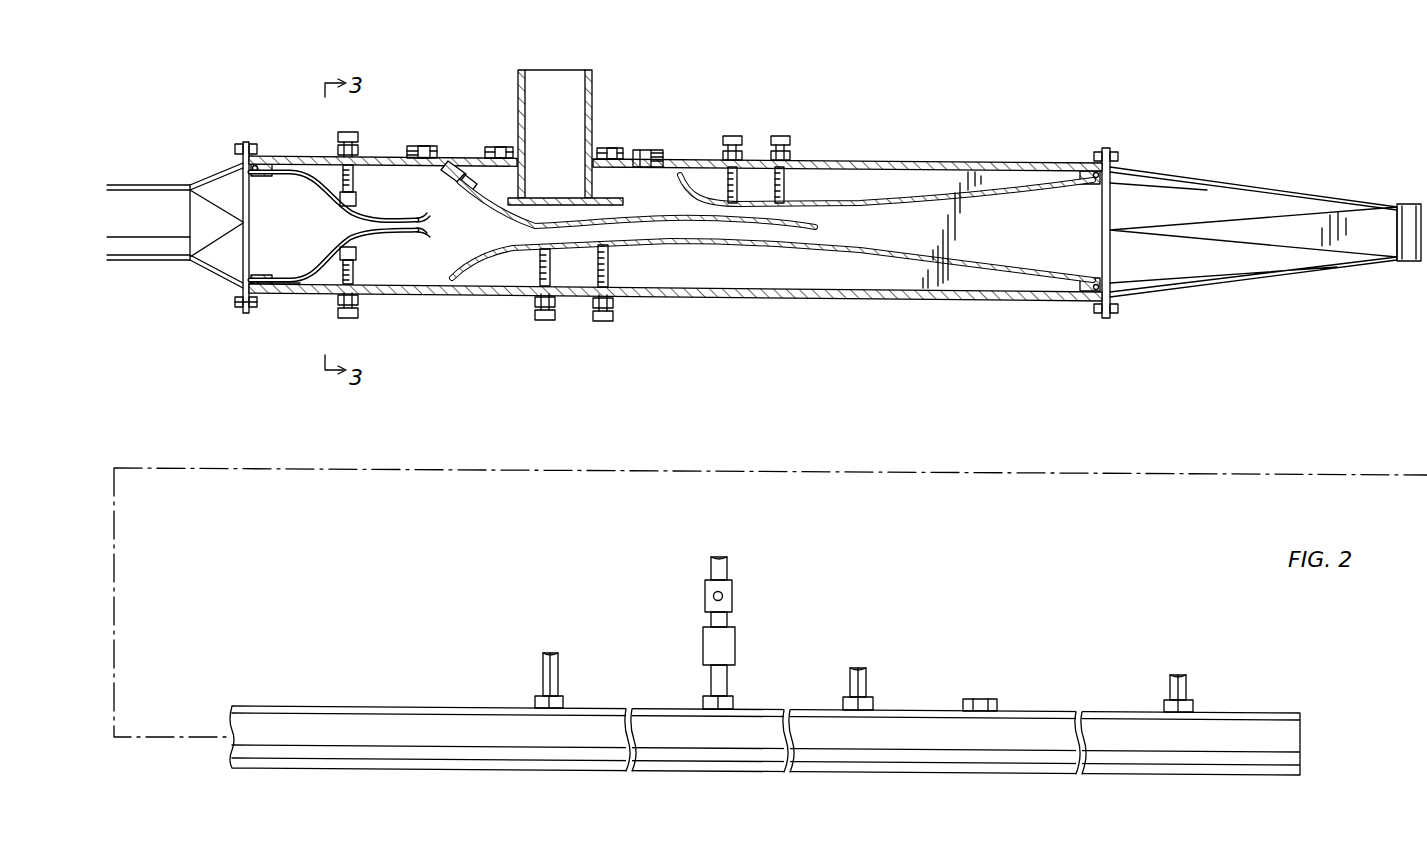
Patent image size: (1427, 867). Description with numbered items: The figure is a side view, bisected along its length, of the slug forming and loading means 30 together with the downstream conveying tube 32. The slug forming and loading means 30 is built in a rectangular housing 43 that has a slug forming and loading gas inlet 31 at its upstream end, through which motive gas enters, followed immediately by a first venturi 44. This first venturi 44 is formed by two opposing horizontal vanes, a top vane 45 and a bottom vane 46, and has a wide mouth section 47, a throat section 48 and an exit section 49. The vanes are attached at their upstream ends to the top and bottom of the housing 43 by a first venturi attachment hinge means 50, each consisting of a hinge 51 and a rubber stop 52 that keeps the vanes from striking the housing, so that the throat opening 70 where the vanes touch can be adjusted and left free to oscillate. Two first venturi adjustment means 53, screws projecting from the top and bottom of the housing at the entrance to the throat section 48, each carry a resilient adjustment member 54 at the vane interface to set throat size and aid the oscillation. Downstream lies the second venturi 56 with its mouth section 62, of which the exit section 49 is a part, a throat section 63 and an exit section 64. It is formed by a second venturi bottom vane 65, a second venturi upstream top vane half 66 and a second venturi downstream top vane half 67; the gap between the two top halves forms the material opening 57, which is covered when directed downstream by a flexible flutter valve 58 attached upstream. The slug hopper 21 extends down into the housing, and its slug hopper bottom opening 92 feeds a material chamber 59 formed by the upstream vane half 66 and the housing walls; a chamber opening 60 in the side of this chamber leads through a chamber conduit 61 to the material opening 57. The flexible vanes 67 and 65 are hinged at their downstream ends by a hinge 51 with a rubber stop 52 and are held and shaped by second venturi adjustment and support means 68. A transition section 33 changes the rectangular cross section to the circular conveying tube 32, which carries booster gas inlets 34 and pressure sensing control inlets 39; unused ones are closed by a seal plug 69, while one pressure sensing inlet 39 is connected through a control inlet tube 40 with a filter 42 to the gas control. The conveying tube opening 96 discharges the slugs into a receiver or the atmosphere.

The slug hopper 21 is at (585, 165).
The slug forming and loading means 30 is at (852, 163).
The slug forming and loading gas inlet 31 is at (205, 190).
The conveying tube 32 is at (1405, 205).
The transition section 33 is at (1236, 183).
The booster gas inlets 34 is at (535, 699).
The pressure sensing control inlet 39 is at (437, 149).
The control inlet tube 40 is at (733, 594).
The filter 42 is at (735, 644).
The housing 43 is at (833, 300).
The first venturi 44 is at (348, 226).
The top vane 45 is at (299, 170).
The bottom vane 46 is at (292, 287).
The wide mouth section 47 is at (262, 238).
The throat section 48 is at (392, 221).
The exit section 49 is at (421, 236).
The first venturi attachment hinge means 50 is at (242, 302).
The hinge 51 is at (242, 168).
The rubber stop 52 is at (263, 165).
The first venturi adjustment means 53 is at (349, 131).
The resilient adjustment member 54 is at (358, 195).
The second venturi 56 is at (686, 228).
The material opening 57 is at (690, 212).
The flutter valve 58 is at (662, 205).
The material chamber 59 is at (531, 188).
The chamber opening 60 is at (582, 188).
The chamber conduit 61 is at (615, 185).
The mouth section 62 is at (457, 240).
The throat section 63 is at (644, 230).
The exit section 64 is at (1063, 230).
The second venturi bottom vane 65 is at (740, 136).
The second venturi upstream top vane half 66 is at (533, 207).
The second venturi downstream top vane half 67 is at (912, 200).
The second venturi adjustment and support means 68 is at (598, 323).
The seal plug 69 is at (422, 147).
The throat opening 70 is at (404, 219).
The slug hopper bottom opening 92 is at (543, 160).
The conveying tube opening 96 is at (1300, 760).